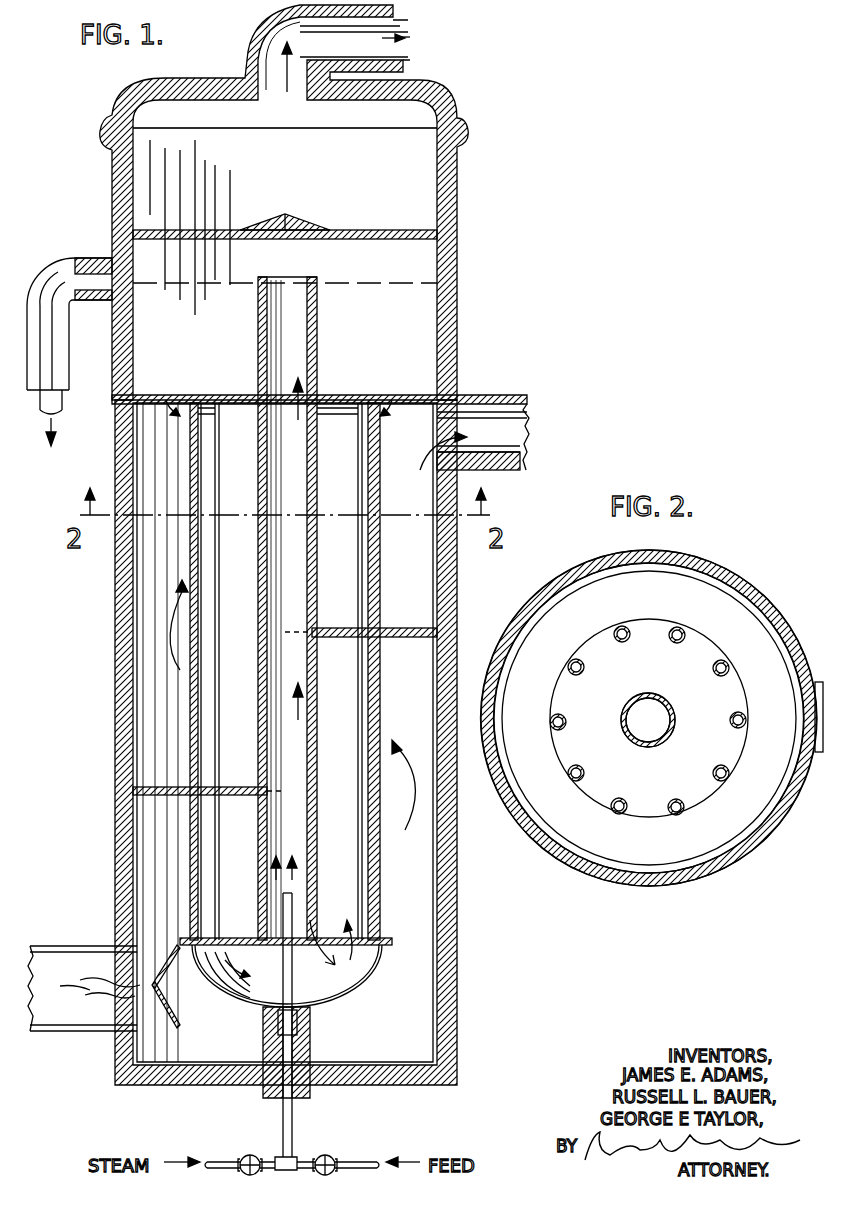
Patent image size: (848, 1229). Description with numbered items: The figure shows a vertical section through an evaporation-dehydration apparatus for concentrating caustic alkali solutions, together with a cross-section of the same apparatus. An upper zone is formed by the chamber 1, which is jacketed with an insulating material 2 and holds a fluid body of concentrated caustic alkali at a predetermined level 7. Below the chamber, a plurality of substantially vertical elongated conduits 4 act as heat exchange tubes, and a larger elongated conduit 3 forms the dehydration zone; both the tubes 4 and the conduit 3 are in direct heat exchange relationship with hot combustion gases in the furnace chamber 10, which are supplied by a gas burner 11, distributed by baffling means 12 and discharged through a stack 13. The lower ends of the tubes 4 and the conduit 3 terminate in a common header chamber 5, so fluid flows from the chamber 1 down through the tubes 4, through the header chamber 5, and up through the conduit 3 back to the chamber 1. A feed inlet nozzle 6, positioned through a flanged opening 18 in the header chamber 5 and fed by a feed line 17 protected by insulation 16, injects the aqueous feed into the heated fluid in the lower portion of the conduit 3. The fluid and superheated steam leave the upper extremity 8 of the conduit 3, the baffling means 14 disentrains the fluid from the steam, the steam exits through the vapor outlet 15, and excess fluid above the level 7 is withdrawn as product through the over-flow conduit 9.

In FIG. 1, the chamber 1 is at (168, 172).
In FIG. 1, the insulating material 2 is at (458, 180).
In FIG. 1, the elongated conduit 3 is at (258, 603).
In FIG. 2, the elongated conduit 3 is at (655, 694).
In FIG. 1, the elongated conduits 4 is at (253, 575).
In FIG. 2, the elongated conduits 4 is at (622, 642).
In FIG. 1, the header chamber 5 is at (286, 963).
In FIG. 1, the feed inlet nozzle 6 is at (292, 893).
In FIG. 1, the level 7 is at (222, 285).
In FIG. 1, the upper extremity 8 is at (305, 277).
In FIG. 1, the over-flow conduit 9 is at (78, 262).
In FIG. 1, the furnace chamber 10 is at (163, 718).
In FIG. 2, the furnace chamber 10 is at (556, 634).
In FIG. 1, the gas burner 11 is at (68, 985).
In FIG. 1, the baffling means 12 is at (240, 786).
In FIG. 1, the stack 13 is at (512, 466).
In FIG. 2, the stack 13 is at (818, 682).
In FIG. 1, the baffling means 14 is at (302, 222).
In FIG. 1, the vapor outlet 15 is at (398, 50).
In FIG. 1, the insulation 16 is at (306, 1040).
In FIG. 1, the feed line 17 is at (162, 1000).
In FIG. 1, the flanged opening 18 is at (298, 1020).